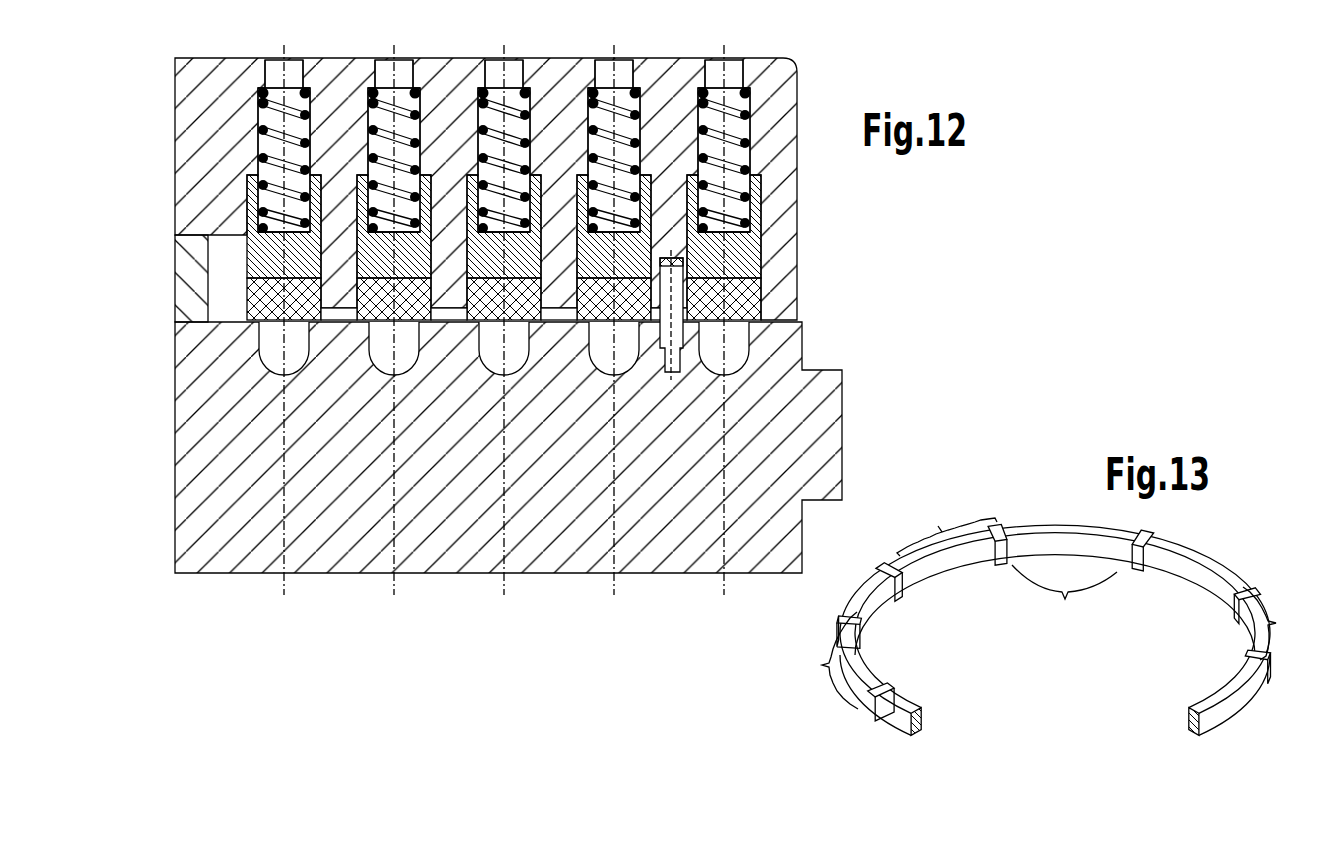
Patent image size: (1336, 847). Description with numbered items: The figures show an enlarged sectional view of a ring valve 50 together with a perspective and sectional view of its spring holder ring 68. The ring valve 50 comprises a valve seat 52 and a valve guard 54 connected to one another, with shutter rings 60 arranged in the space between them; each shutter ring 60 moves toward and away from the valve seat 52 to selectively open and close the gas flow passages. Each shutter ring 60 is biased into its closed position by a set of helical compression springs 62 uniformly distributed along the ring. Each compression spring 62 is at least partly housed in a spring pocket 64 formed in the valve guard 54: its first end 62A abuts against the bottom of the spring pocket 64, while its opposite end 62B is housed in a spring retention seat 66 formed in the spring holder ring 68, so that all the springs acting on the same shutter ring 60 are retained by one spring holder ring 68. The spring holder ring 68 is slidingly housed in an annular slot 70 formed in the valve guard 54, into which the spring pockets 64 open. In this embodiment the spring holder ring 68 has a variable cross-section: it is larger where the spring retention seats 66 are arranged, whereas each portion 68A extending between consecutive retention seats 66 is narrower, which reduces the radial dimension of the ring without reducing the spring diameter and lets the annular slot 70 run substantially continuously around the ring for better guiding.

In FIG. 12, the ring valve 50 is at (573, 315).
In FIG. 12, the valve seat 52 is at (836, 440).
In FIG. 12, the valve guard 54 is at (175, 130).
In FIG. 12, the shutter ring 60 is at (767, 308).
In FIG. 12, the helical compression spring 62 is at (270, 148).
In FIG. 12, the first end of compression spring 62A is at (283, 88).
In FIG. 12, the opposite end of compression spring 62B is at (284, 233).
In FIG. 12, the spring pocket 64 is at (755, 93).
In FIG. 12, the spring retention seat 66 is at (763, 203).
In FIG. 13, the spring retention seat 66 is at (852, 614).
In FIG. 12, the spring holder ring 68 is at (762, 262).
In FIG. 13, the spring holder ring 68 is at (910, 612).
In FIG. 13, the narrower portion of spring holder ring 68A is at (1043, 602).
In FIG. 12, the annular slot 70 is at (735, 163).